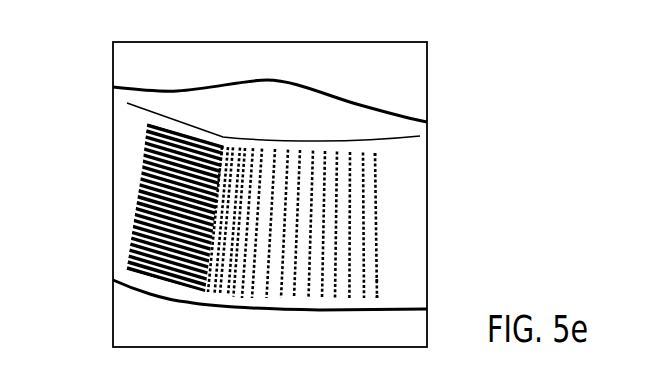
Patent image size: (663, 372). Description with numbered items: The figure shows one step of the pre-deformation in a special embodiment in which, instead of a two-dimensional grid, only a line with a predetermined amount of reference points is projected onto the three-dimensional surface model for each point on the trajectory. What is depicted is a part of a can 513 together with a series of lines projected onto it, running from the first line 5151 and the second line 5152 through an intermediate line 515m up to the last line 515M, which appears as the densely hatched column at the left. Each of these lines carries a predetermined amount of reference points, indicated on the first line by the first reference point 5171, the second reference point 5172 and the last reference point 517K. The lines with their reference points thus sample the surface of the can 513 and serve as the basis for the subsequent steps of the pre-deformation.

The can 513 is at (242, 95).
The line M 515M is at (146, 138).
The line m 515m is at (245, 148).
The line 2 5152 is at (363, 152).
The line 1 5151 is at (376, 156).
The reference point K 517K is at (375, 157).
The reference point 2 5172 is at (376, 280).
The reference point 1 5171 is at (377, 292).